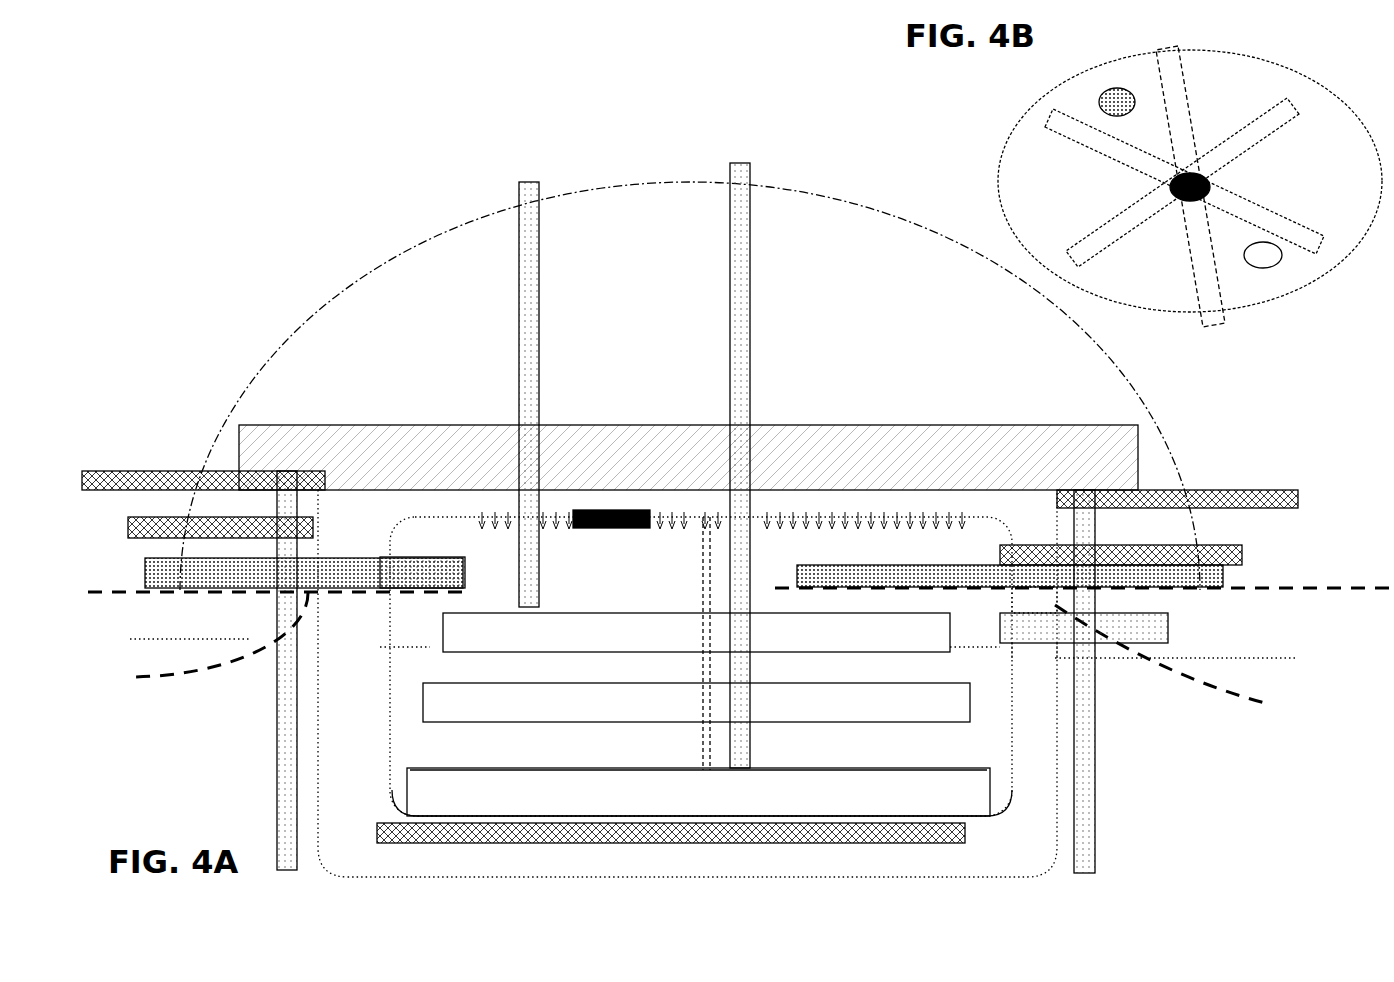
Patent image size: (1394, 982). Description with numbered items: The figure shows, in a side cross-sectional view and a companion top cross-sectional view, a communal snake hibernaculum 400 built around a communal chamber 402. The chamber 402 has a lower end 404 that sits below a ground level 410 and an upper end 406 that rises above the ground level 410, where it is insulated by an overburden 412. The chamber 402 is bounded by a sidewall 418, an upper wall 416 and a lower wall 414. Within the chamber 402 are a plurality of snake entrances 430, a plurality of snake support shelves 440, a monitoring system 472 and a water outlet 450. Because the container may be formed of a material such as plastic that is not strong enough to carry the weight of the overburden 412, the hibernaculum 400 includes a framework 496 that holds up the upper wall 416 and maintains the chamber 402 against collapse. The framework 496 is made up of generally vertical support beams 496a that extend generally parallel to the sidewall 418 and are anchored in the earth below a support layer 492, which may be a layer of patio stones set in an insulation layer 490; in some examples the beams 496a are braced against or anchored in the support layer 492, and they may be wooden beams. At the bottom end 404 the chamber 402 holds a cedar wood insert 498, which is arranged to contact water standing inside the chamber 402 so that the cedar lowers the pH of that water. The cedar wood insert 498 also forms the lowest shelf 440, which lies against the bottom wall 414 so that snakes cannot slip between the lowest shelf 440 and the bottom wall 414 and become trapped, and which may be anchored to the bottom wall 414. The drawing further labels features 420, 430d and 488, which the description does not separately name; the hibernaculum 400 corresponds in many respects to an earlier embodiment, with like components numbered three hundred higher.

In FIG. 4A, the communal snake hibernaculum 400 is at (255, 281).
In FIG. 4B, the communal snake hibernaculum 400 is at (973, 108).
In FIG. 4A, the communal chamber 402 is at (403, 678).
In FIG. 4A, the lower end 404 is at (345, 790).
In FIG. 4A, the upper end 406 is at (890, 453).
In FIG. 4A, the ground level 410 is at (1305, 588).
In FIG. 4A, the overburden 412 is at (852, 212).
In FIG. 4A, the lower wall 414 is at (947, 815).
In FIG. 4A, the upper wall 416 is at (463, 440).
In FIG. 4A, the sidewall 418 is at (388, 775).
In FIG. 4A, the liner 420 is at (388, 712).
In FIG. 4A, the snake entrances 430 is at (535, 228).
In FIG. 4B, the shaft 430d is at (1108, 92).
In FIG. 4A, the snake support shelves 440 is at (612, 612).
In FIG. 4B, the snake support shelves 440 is at (1268, 215).
In FIG. 4A, the water outlet 450 is at (1110, 630).
In FIG. 4A, the monitoring system 472 is at (719, 164).
In FIG. 4B, the monitoring system 472 is at (1263, 263).
In FIG. 4A, the gas inlet 488 is at (480, 514).
In FIG. 4A, the insulation layer 490 is at (330, 697).
In FIG. 4A, the support layer 492 is at (965, 836).
In FIG. 4A, the framework 496 is at (1106, 715).
In FIG. 4A, the vertical support beams 496a is at (282, 785).
In FIG. 4A, the cedar wood insert 498 is at (864, 773).